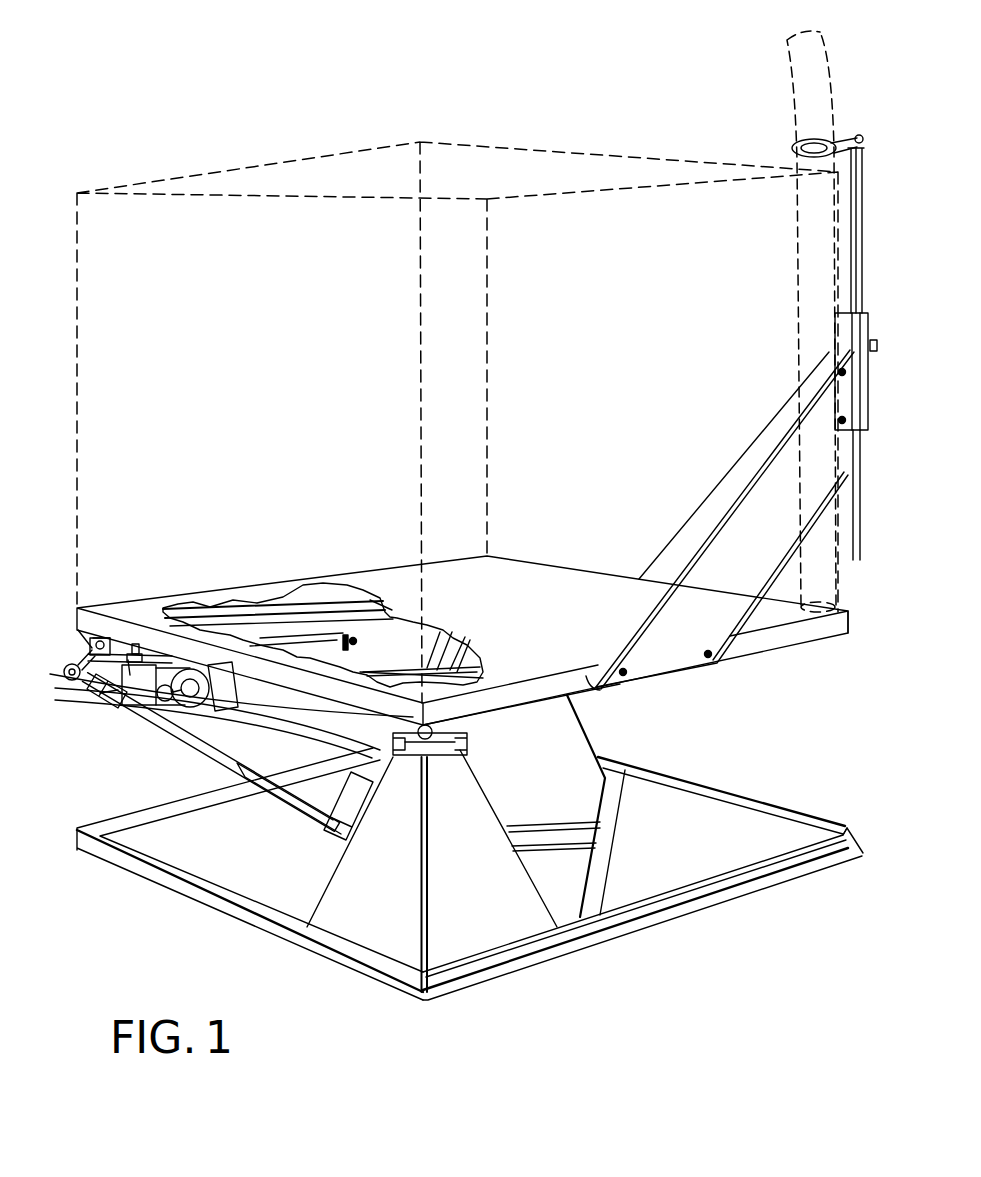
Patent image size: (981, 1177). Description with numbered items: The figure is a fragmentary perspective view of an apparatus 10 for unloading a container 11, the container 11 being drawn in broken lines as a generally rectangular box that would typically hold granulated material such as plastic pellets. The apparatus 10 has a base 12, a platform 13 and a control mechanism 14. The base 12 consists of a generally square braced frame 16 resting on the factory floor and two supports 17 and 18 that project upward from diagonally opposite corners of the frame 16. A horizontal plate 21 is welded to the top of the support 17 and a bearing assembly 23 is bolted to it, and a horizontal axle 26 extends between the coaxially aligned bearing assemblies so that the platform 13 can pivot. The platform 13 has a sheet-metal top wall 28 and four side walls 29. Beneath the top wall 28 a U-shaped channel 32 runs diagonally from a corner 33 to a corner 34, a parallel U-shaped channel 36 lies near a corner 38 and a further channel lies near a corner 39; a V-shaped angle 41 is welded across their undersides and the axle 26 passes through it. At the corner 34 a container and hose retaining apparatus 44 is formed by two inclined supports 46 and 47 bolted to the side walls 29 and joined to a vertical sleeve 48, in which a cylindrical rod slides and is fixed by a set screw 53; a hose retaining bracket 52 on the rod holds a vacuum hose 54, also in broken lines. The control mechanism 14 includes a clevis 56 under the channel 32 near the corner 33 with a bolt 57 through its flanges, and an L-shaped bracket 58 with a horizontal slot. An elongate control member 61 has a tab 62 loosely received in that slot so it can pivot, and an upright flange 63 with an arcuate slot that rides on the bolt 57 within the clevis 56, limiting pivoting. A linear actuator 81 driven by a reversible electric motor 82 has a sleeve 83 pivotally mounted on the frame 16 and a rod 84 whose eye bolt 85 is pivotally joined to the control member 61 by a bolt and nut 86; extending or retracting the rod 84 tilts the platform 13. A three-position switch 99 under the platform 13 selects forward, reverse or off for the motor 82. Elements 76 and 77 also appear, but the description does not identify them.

The apparatus 10 is at (808, 708).
The container 11 is at (557, 147).
The base 12 is at (620, 738).
The platform 13 is at (832, 640).
The control mechanism 14 is at (186, 710).
The braced frame 16 is at (107, 870).
The support 17 is at (473, 920).
The support 18 is at (538, 733).
The horizontal plate 21 is at (407, 753).
The bearing assembly 23 is at (440, 740).
The horizontal axle 26 is at (433, 740).
The top wall 28 is at (518, 601).
The side walls 29 is at (588, 680).
The U-shaped channel 32 is at (230, 608).
The corner 33 is at (97, 628).
The corner 34 is at (849, 617).
The U-shaped channel 36 is at (452, 679).
The corner 38 is at (413, 715).
The corner 39 is at (488, 548).
The V-shaped angle 41 is at (466, 658).
The container and hose retaining apparatus 44 is at (453, 390).
The support 46 is at (732, 544).
The support 47 is at (708, 504).
The vertical sleeve 48 is at (857, 341).
The hose retaining bracket 52 is at (843, 135).
The set screw 53 is at (873, 340).
The vacuum hose 54 is at (790, 88).
The clevis 56 is at (93, 642).
The bolt 57 is at (857, 258).
The L-shaped bracket 58 is at (362, 645).
The control member 61 is at (100, 672).
The tab 62 is at (360, 644).
The upright flange 63 is at (88, 655).
The link 76 is at (130, 675).
The fitting 77 is at (118, 640).
The linear actuator 81 is at (192, 758).
The reversible electric motor 82 is at (347, 803).
The sleeve 83 is at (267, 783).
The rod 84 is at (100, 693).
The eye bolt 85 is at (78, 681).
The bolt and nut 86 is at (63, 672).
The three-position manually operable switch 99 is at (196, 705).